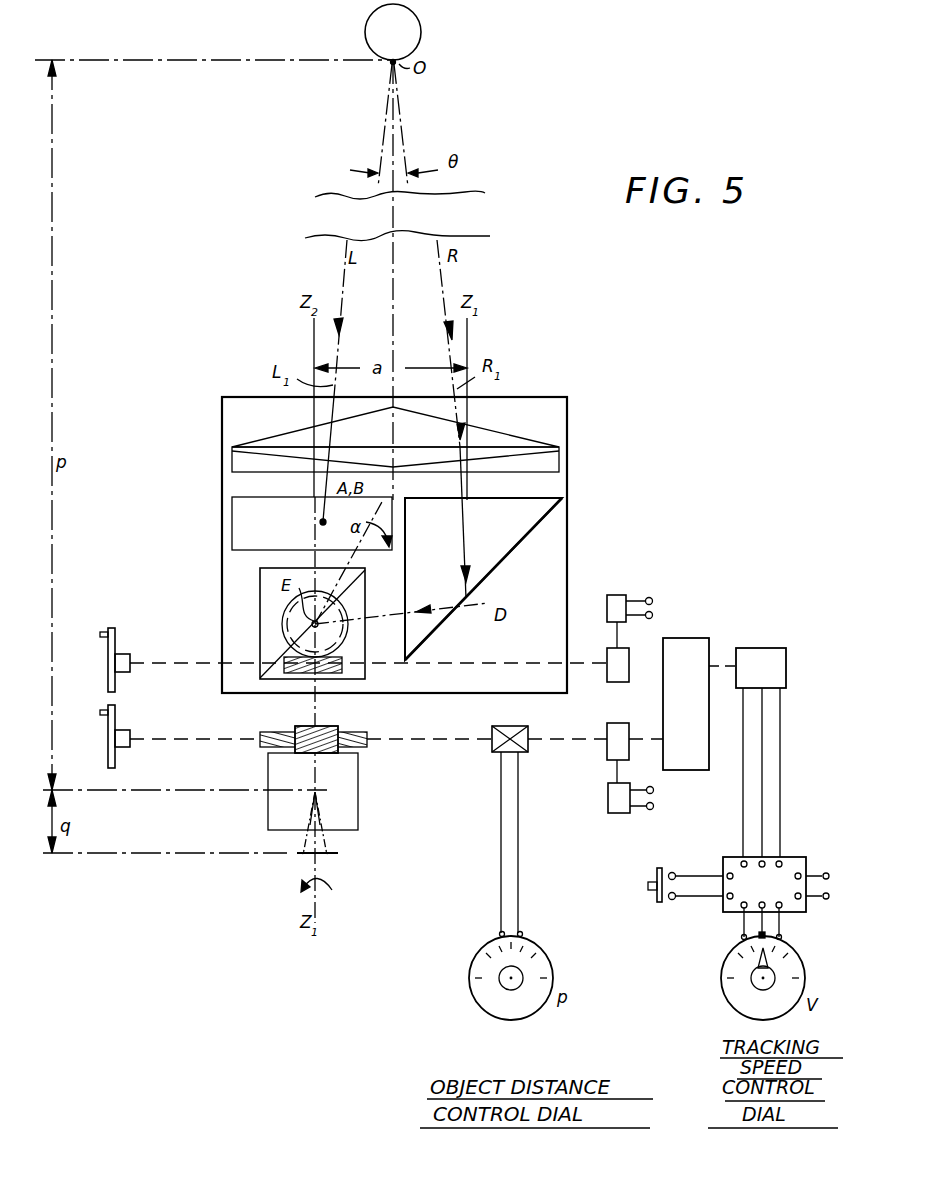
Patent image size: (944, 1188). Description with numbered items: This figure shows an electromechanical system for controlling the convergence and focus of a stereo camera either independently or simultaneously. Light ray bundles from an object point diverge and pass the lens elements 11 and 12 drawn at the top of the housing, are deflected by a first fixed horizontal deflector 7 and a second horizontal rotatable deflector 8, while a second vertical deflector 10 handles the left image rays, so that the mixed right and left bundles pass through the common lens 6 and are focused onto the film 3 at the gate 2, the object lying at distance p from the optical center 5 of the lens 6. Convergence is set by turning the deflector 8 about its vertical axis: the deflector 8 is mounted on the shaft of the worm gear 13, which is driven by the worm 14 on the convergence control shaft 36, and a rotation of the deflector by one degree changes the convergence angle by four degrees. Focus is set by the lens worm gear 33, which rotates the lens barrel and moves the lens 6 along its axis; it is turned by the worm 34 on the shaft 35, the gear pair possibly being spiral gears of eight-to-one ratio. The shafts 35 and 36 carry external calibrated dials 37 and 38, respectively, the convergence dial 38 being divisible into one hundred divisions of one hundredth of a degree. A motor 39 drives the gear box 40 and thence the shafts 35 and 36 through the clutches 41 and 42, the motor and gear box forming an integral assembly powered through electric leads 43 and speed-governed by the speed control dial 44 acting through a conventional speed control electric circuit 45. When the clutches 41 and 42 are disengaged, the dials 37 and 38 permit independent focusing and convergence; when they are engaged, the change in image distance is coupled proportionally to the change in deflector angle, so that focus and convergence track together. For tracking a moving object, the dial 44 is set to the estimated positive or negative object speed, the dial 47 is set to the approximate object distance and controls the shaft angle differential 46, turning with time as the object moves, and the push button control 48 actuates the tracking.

The gate 2 is at (187, 855).
The film 3 is at (322, 851).
The optical center of the lens 5 is at (231, 825).
The lens 6 is at (358, 808).
The first fixed horizontal deflector 7 is at (443, 562).
The second horizontal rotatable deflector 8 is at (262, 589).
The second vertical deflector 10 is at (232, 522).
The rangefinder lens 11 is at (493, 439).
The rangefinder lens 12 is at (277, 438).
The worm gear 13 is at (282, 627).
The worm 14 is at (343, 669).
The lens worm gear 33 is at (363, 743).
The worm 34 is at (303, 726).
The shaft 35 is at (418, 738).
The convergence control shaft 36 is at (490, 663).
The external calibrated dial 37 is at (115, 760).
The external calibrated dial 38 is at (117, 638).
The motor 39 is at (768, 648).
The gear box 40 is at (692, 715).
The clutch 41 is at (608, 762).
The clutch 42 is at (607, 655).
The electric leads 43 is at (762, 774).
The speed control dial 44 is at (805, 976).
The speed control electric circuit 45 is at (732, 857).
The shaft angle differential 46 is at (497, 754).
The dial 47 is at (473, 998).
The push button control 48 is at (665, 868).